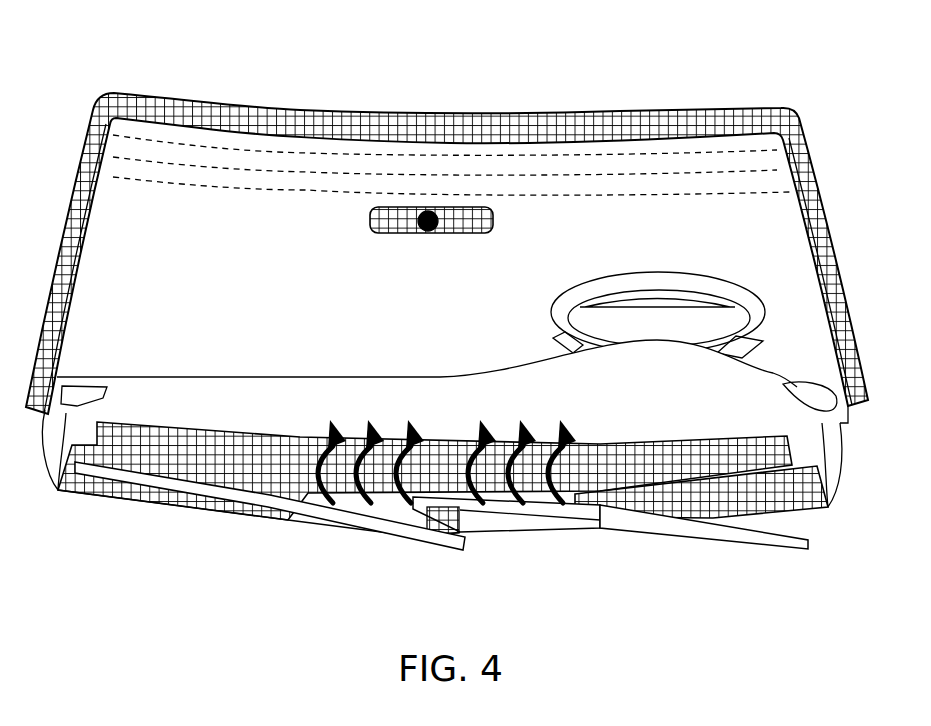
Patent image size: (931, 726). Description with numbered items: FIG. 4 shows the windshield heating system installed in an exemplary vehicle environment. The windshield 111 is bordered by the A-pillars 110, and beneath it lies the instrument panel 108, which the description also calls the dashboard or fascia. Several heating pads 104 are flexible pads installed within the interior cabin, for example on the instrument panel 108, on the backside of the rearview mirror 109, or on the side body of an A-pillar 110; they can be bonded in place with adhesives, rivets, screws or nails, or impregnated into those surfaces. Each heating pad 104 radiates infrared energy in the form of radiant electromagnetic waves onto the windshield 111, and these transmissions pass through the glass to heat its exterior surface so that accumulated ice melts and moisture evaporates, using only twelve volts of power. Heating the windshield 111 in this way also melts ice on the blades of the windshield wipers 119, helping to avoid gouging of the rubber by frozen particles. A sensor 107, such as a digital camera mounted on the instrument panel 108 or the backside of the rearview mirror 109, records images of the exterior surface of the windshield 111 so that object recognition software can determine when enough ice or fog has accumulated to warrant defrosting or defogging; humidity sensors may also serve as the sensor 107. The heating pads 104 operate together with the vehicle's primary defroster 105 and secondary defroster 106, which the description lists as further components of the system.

The heating pad 104 is at (228, 448).
The primary defroster 105 is at (311, 520).
The secondary defroster 106 is at (180, 163).
The sensor 107 is at (430, 232).
The instrument panel 108 is at (175, 393).
The rearview mirror 109 is at (493, 218).
The A-pillar 110 is at (97, 143).
The windshield 111 is at (131, 239).
The windshield wiper 119 is at (428, 541).